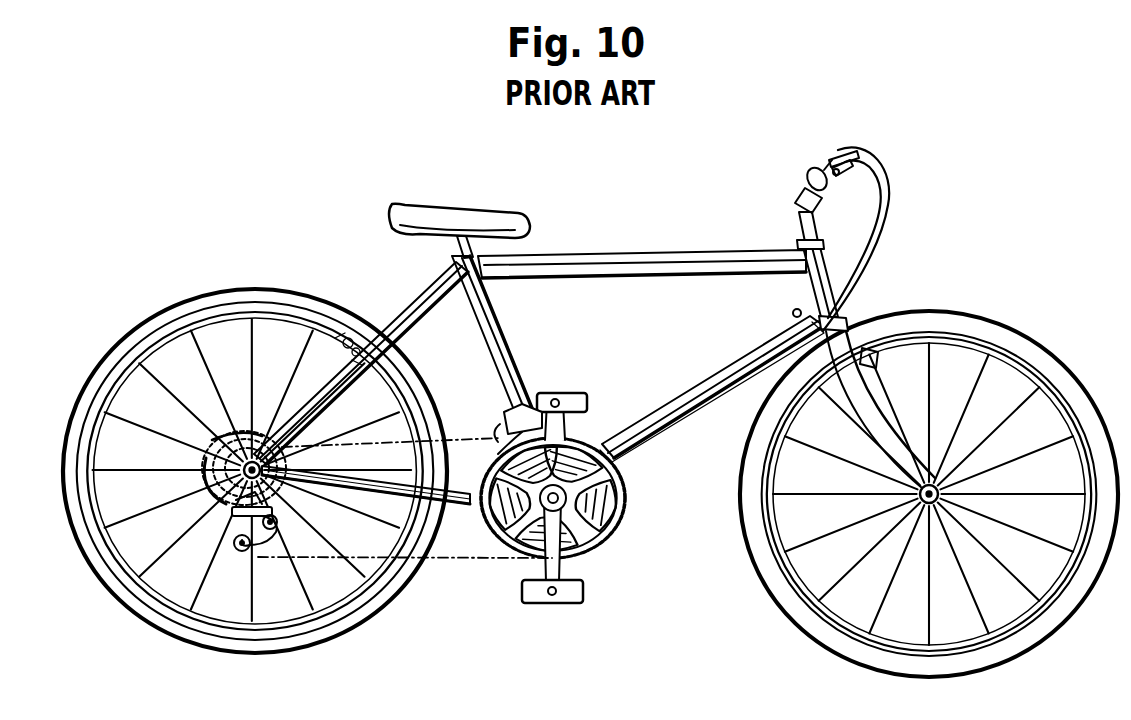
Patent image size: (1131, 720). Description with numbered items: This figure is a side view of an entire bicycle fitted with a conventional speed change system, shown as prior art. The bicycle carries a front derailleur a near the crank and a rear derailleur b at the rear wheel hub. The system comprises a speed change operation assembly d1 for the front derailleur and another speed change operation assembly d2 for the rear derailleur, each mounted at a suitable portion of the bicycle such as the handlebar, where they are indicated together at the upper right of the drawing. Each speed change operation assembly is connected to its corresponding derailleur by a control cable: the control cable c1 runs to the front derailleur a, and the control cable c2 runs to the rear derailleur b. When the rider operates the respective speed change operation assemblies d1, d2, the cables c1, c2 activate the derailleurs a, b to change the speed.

The front derailleur a is at (497, 418).
The rear derailleur b is at (232, 510).
The control cable c1 is at (677, 414).
The control cable c2 is at (454, 502).
The speed change operation assembly d1 is at (859, 205).
The speed change operation assembly d2 is at (832, 152).